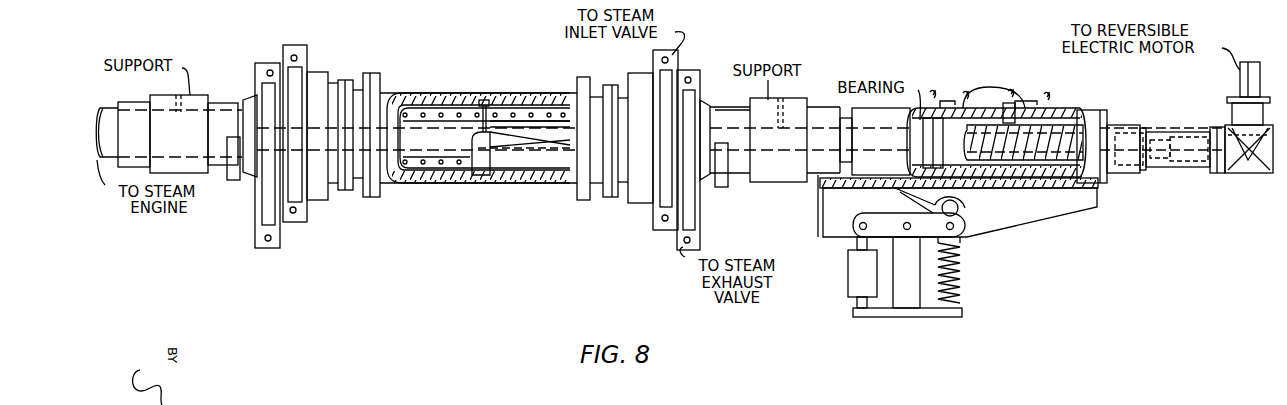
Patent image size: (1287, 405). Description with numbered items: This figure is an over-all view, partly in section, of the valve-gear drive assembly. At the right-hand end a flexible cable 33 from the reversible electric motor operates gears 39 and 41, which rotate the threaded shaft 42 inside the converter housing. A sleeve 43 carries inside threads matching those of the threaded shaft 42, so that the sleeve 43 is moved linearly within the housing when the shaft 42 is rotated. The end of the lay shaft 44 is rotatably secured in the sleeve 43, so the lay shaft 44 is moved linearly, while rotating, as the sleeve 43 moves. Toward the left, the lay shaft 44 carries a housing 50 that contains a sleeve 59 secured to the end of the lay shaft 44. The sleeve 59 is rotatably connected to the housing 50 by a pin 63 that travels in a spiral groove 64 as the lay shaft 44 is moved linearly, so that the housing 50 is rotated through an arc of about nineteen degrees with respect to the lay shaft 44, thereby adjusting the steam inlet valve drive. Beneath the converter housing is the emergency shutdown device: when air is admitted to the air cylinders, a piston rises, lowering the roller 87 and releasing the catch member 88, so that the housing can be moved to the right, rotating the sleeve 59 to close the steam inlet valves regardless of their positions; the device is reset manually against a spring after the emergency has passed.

The flexible cable 33 is at (1240, 75).
The gear 39 is at (1258, 163).
The gear 41 is at (1225, 173).
The threaded shaft 42 is at (1038, 150).
The sleeve 43 is at (1107, 183).
The lay shaft 44 is at (772, 140).
The housing 50 is at (445, 183).
The sleeve 59 is at (508, 108).
The pin 63 is at (483, 100).
The spiral groove 64 is at (535, 140).
The roller 87 is at (963, 210).
The catch member 88 is at (972, 195).